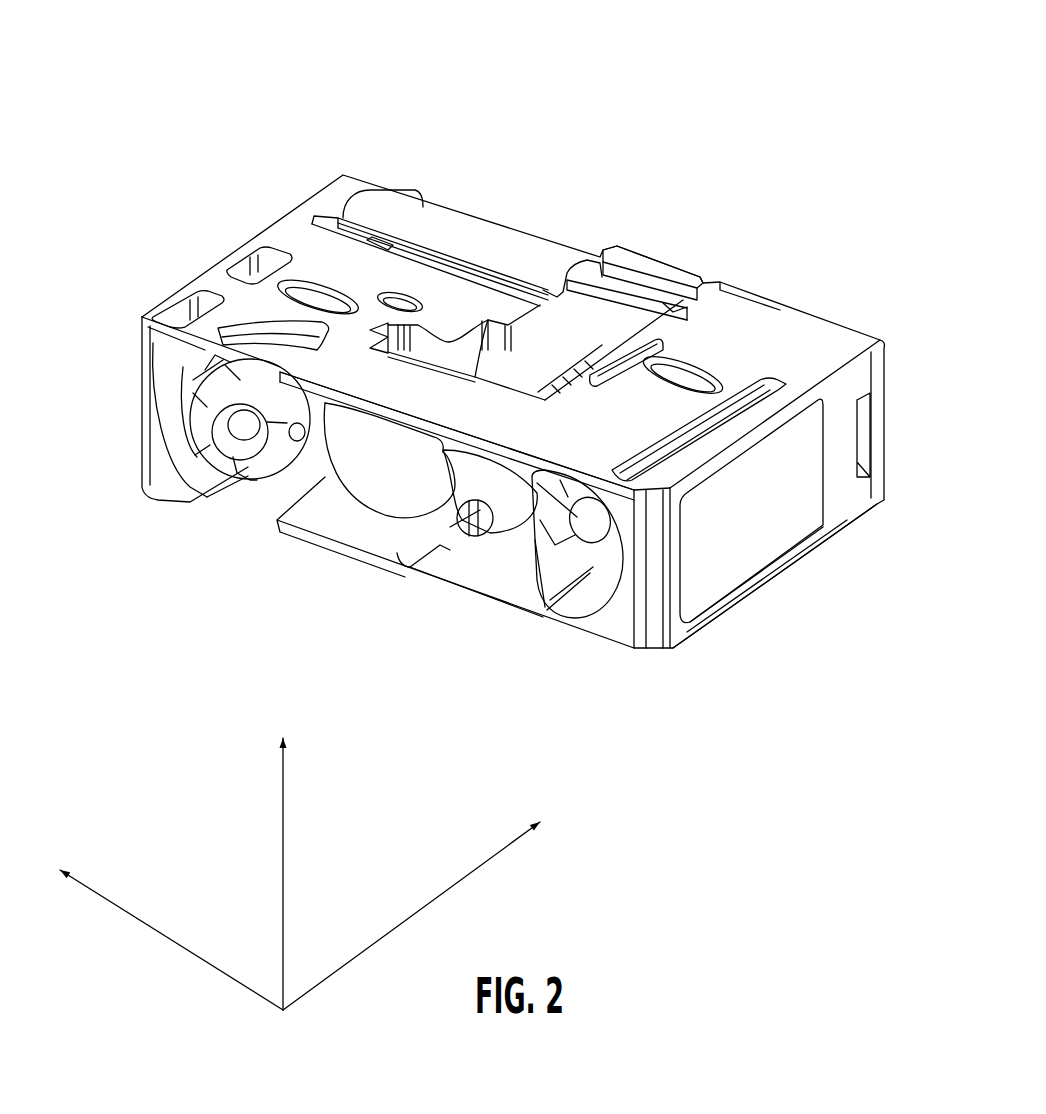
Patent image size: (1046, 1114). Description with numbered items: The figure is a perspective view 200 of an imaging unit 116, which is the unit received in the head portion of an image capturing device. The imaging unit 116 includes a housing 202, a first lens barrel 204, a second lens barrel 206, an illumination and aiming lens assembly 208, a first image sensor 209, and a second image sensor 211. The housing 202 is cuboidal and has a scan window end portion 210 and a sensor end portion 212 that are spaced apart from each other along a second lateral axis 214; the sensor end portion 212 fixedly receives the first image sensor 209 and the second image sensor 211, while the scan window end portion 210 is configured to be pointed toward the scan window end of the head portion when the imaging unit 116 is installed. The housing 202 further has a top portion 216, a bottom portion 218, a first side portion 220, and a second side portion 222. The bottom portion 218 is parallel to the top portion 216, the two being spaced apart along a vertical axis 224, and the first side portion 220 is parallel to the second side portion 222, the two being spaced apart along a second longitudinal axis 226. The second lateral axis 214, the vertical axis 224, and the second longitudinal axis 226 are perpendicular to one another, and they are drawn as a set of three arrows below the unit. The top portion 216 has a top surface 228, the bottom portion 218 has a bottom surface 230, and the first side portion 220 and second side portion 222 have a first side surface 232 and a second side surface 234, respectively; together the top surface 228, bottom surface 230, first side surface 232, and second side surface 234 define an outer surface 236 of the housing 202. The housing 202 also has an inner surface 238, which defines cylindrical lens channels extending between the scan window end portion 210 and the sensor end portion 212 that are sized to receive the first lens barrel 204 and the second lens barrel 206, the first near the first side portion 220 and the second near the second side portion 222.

The perspective view 200 is at (253, 88).
The imaging unit 116 is at (290, 240).
The second image sensor 211 is at (430, 200).
The outer surface 236 is at (418, 392).
The sensor end portion 212 is at (652, 242).
The top portion 216 is at (711, 302).
The housing 202 is at (796, 330).
The top surface 228 is at (820, 368).
The second side surface 234 is at (160, 290).
The second side portion 222 is at (130, 330).
The scan window end portion 210 is at (130, 386).
The second lens barrel 206 is at (255, 480).
The illumination and aiming lens assembly 208 is at (388, 485).
The inner surface 238 is at (458, 566).
The first lens barrel 204 is at (540, 545).
The first image sensor 209 is at (880, 442).
The first side portion 220 is at (848, 512).
The first side surface 232 is at (742, 590).
The bottom surface 230 is at (728, 616).
The bottom portion 218 is at (664, 650).
The vertical axis 224 is at (283, 870).
The second lateral axis 214 is at (418, 912).
The second longitudinal axis 226 is at (145, 917).